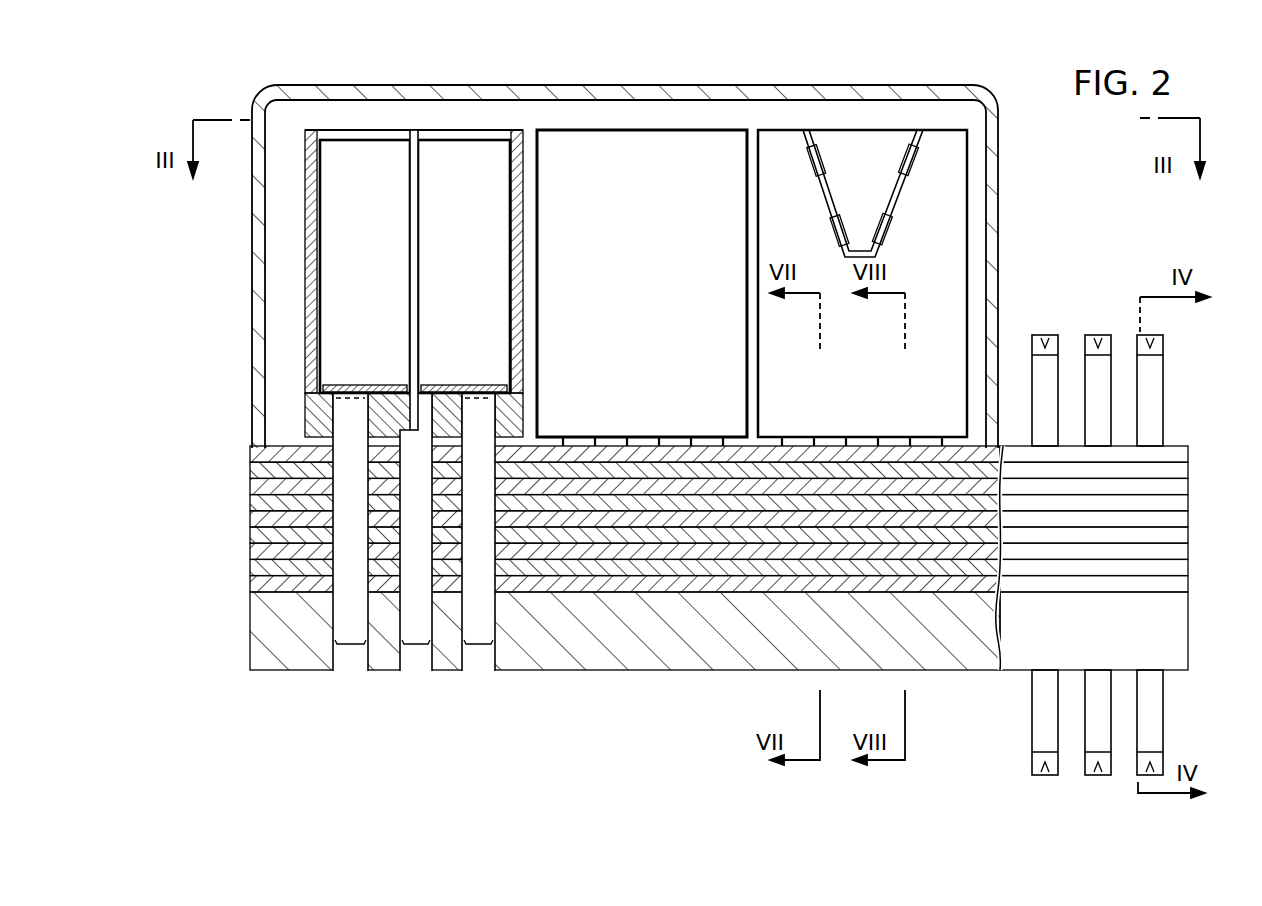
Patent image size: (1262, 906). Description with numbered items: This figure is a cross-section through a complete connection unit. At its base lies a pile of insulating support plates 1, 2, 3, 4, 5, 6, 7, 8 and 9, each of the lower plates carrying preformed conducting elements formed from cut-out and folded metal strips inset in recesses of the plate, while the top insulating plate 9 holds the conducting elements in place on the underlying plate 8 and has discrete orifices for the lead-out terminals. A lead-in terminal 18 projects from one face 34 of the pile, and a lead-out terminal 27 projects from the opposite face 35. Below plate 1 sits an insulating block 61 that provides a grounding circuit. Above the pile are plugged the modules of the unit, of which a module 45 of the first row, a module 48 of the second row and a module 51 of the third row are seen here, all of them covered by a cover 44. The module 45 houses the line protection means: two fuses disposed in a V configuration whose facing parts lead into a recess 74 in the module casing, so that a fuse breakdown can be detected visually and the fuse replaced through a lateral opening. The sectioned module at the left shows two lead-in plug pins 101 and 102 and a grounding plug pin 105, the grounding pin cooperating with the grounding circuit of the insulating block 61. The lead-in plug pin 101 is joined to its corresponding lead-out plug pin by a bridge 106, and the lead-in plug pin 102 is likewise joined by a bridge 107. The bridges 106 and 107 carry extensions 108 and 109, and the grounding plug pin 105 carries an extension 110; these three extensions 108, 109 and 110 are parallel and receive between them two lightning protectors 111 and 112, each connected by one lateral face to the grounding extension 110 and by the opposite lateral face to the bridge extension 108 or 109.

The insulating support plate 1 is at (258, 584).
The insulating support plate 2 is at (258, 567).
The insulating support plate 3 is at (258, 551).
The insulating support plate 4 is at (258, 535).
The insulating support plate 5 is at (258, 518).
The insulating support plate 6 is at (258, 502).
The insulating support plate 7 is at (258, 486).
The insulating support plate 8 is at (258, 470).
The insulating support plate 9 is at (258, 454).
The lead-in terminal 18 is at (1150, 715).
The lead-out terminal 27 is at (1148, 391).
The face of the pile 34 is at (705, 672).
The face of the pile 35 is at (612, 437).
The cover 44 is at (462, 93).
The module 45 is at (940, 160).
The module 48 is at (640, 150).
The module 51 is at (380, 236).
The insulating block 61 is at (952, 650).
The recess 74 is at (865, 180).
The lead-in plug pin 101 is at (478, 620).
The lead-in plug pin 102 is at (362, 625).
The grounding plug pin 105 is at (416, 632).
The bridge 106 is at (485, 385).
The bridge 107 is at (345, 385).
The extension 108 is at (518, 215).
The extension 109 is at (313, 228).
The extension 110 is at (414, 138).
The lightning protector 111 is at (470, 285).
The lightning protector 112 is at (355, 265).